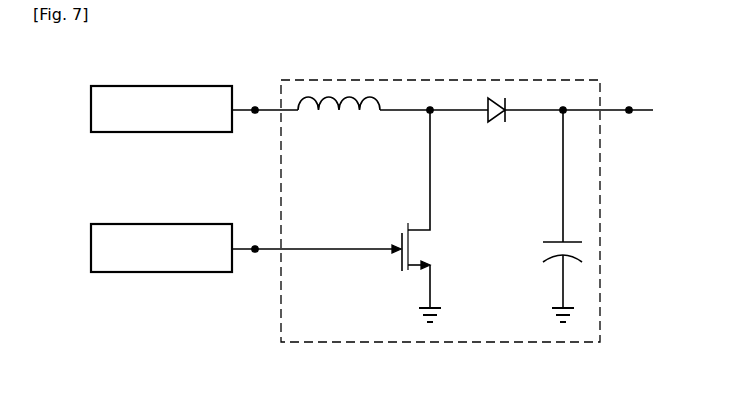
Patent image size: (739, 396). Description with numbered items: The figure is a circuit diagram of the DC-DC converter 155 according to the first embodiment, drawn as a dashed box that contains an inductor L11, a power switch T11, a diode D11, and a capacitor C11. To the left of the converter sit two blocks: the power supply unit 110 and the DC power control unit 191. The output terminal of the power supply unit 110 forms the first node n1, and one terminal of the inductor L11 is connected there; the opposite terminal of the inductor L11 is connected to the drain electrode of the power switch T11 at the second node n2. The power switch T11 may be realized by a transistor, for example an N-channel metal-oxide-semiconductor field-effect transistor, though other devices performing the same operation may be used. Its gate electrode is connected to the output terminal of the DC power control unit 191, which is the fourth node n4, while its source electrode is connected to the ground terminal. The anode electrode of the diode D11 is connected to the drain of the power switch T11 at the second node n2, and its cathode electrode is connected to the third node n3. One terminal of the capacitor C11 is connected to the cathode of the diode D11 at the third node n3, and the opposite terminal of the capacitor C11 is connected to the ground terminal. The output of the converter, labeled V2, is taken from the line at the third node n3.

The power supply unit 110 is at (91, 109).
The DC power control unit 191 is at (91, 249).
The DC-DC converter 155 is at (447, 77).
The inductor L11 is at (339, 112).
The diode D11 is at (498, 124).
The power switch T11 is at (433, 217).
The capacitor C11 is at (577, 217).
The first node n1 is at (256, 102).
The second node n2 is at (432, 102).
The third node n3 is at (564, 102).
The fourth node n4 is at (256, 240).
The output voltage V2 is at (631, 121).